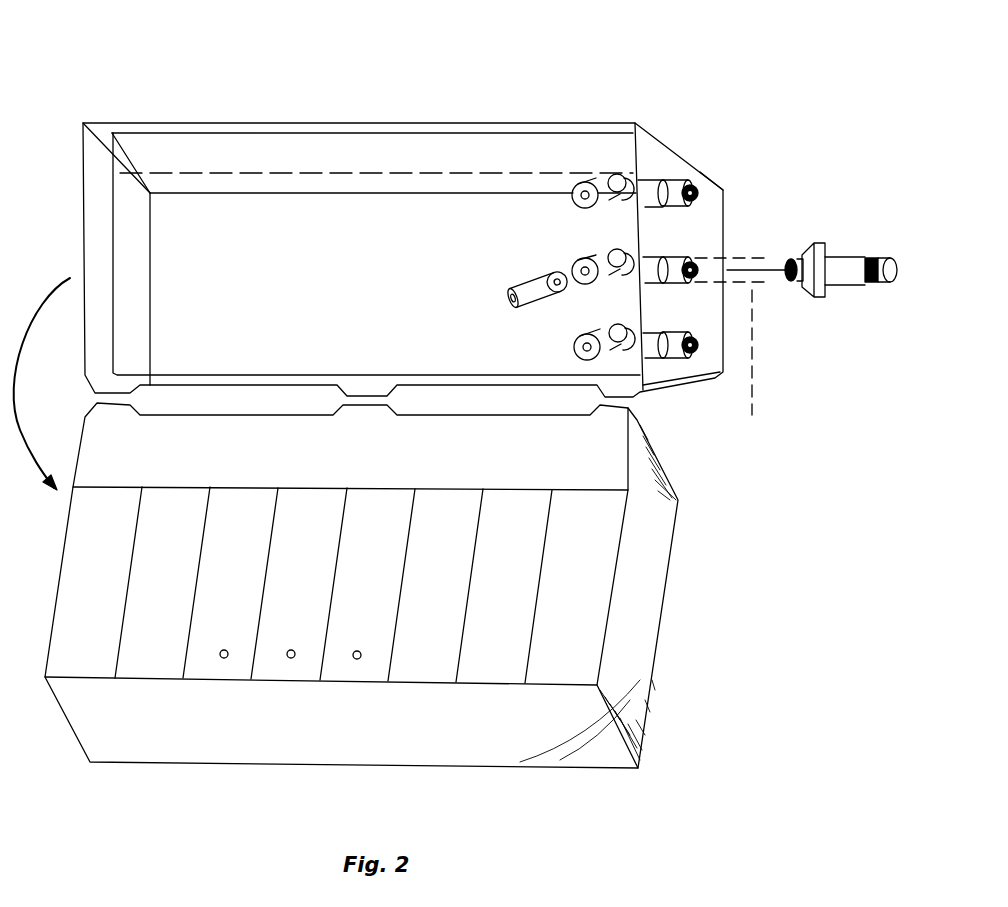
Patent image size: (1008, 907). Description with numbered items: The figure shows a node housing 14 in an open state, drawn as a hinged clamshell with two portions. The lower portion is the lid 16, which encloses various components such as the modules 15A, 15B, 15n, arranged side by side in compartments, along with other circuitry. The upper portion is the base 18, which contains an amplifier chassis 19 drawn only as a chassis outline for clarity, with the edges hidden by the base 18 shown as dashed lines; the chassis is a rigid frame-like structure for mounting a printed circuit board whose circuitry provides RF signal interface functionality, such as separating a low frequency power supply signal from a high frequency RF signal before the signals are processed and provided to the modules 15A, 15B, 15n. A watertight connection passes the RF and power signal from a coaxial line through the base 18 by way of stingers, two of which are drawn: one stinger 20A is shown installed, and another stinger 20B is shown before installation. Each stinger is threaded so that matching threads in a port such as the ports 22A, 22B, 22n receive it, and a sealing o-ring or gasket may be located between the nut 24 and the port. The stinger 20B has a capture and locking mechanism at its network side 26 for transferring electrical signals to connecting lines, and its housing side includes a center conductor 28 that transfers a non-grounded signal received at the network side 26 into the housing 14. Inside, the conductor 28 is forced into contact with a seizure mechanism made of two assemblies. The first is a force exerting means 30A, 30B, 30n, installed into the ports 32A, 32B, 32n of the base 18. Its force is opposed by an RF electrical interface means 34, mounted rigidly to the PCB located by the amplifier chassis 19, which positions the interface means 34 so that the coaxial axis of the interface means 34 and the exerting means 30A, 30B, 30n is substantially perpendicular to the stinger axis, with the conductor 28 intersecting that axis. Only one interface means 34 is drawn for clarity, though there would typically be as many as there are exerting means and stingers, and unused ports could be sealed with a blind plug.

The node housing 14 is at (718, 465).
The module 15A is at (103, 582).
The module 15B is at (308, 584).
The module 15n is at (555, 586).
The lid 16 is at (670, 577).
The base 18 is at (547, 120).
The amplifier chassis 19 is at (400, 142).
The stinger 20A is at (712, 168).
The stinger 20B is at (848, 253).
The port 22A is at (673, 182).
The port 22B is at (693, 250).
The port 22n is at (672, 353).
The nut 24 is at (822, 247).
The network side 26 is at (890, 282).
The center conductor 28 is at (755, 263).
The force exerting means 30A is at (577, 192).
The force exerting means 30B is at (577, 258).
The force exerting means 30n is at (573, 347).
The port 32A is at (610, 200).
The port 32B is at (607, 250).
The port 32n is at (627, 327).
The RF electrical interface means 34 is at (528, 278).